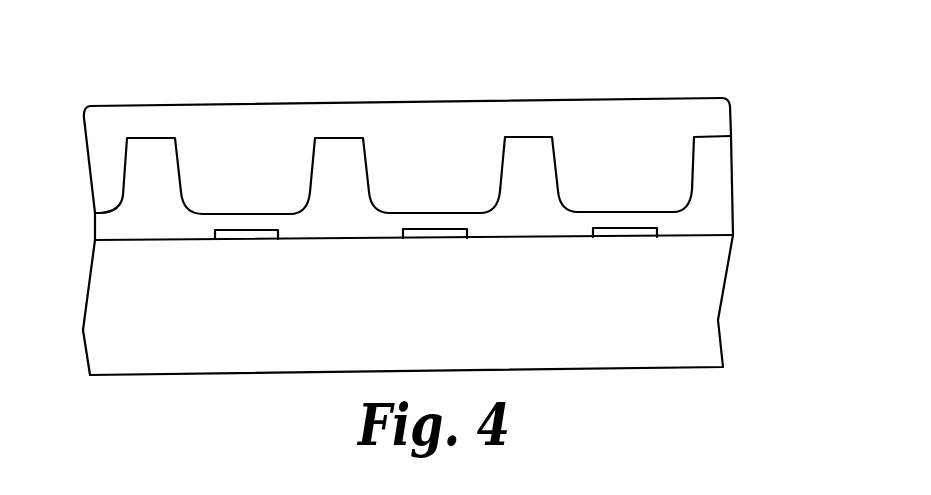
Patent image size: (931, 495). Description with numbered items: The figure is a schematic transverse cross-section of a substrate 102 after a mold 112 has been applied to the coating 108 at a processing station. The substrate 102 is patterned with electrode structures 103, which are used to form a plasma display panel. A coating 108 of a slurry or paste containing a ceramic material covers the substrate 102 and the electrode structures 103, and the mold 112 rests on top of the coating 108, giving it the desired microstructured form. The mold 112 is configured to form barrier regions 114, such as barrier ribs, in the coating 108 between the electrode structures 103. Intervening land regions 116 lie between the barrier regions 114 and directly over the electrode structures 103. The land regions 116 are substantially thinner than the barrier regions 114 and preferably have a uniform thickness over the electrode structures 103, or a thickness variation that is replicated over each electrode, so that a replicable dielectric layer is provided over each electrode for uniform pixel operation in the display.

The substrate 102 is at (722, 298).
The electrode structures 103 is at (447, 229).
The coating 108 is at (733, 210).
The mold 112 is at (732, 112).
The barrier regions 114 is at (136, 138).
The land regions 116 is at (250, 213).